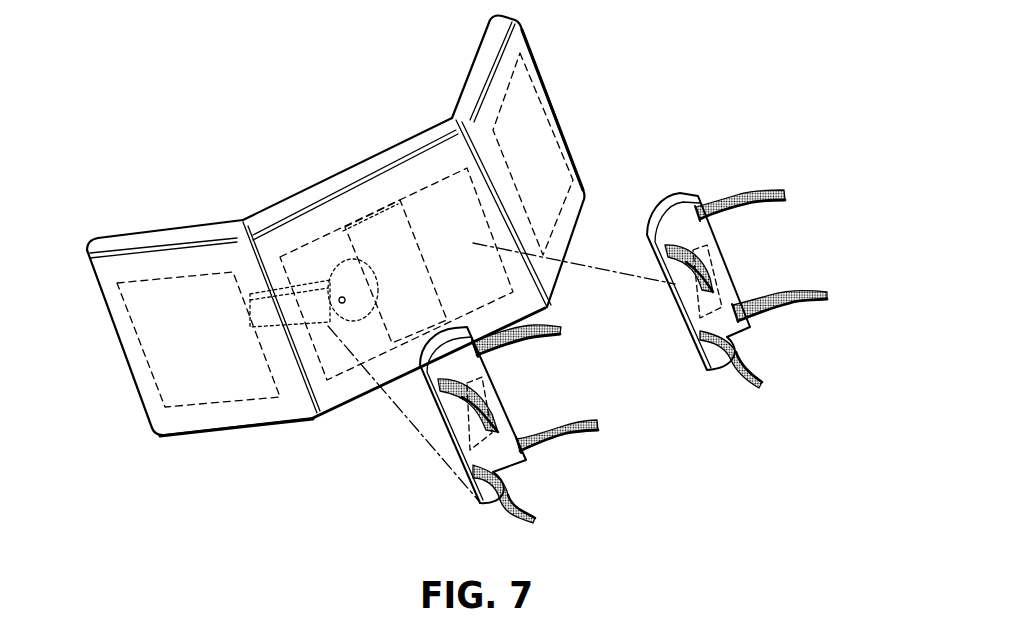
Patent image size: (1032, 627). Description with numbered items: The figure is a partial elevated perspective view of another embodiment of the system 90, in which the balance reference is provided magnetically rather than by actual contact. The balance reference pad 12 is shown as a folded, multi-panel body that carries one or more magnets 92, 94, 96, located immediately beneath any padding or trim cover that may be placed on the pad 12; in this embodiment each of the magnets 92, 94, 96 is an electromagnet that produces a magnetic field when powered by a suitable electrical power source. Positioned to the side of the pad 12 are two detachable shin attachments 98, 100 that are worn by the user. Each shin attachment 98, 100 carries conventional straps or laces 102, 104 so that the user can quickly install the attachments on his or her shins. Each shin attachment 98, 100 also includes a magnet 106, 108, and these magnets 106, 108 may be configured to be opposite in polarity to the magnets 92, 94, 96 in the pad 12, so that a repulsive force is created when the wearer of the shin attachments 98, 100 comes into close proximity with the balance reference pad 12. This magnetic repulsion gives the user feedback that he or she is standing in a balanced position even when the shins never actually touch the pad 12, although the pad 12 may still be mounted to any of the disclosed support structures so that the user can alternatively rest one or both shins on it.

The system 90 is at (602, 58).
The balance reference pad 12 is at (347, 168).
The magnet 92 is at (142, 348).
The magnet 94 is at (415, 192).
The magnet 96 is at (557, 130).
The shin attachment 98 is at (447, 420).
The shin attachment 100 is at (670, 198).
The straps or laces 102 is at (562, 332).
The straps or laces 104 is at (787, 197).
The magnet 106 is at (712, 272).
The magnet 108 is at (480, 403).